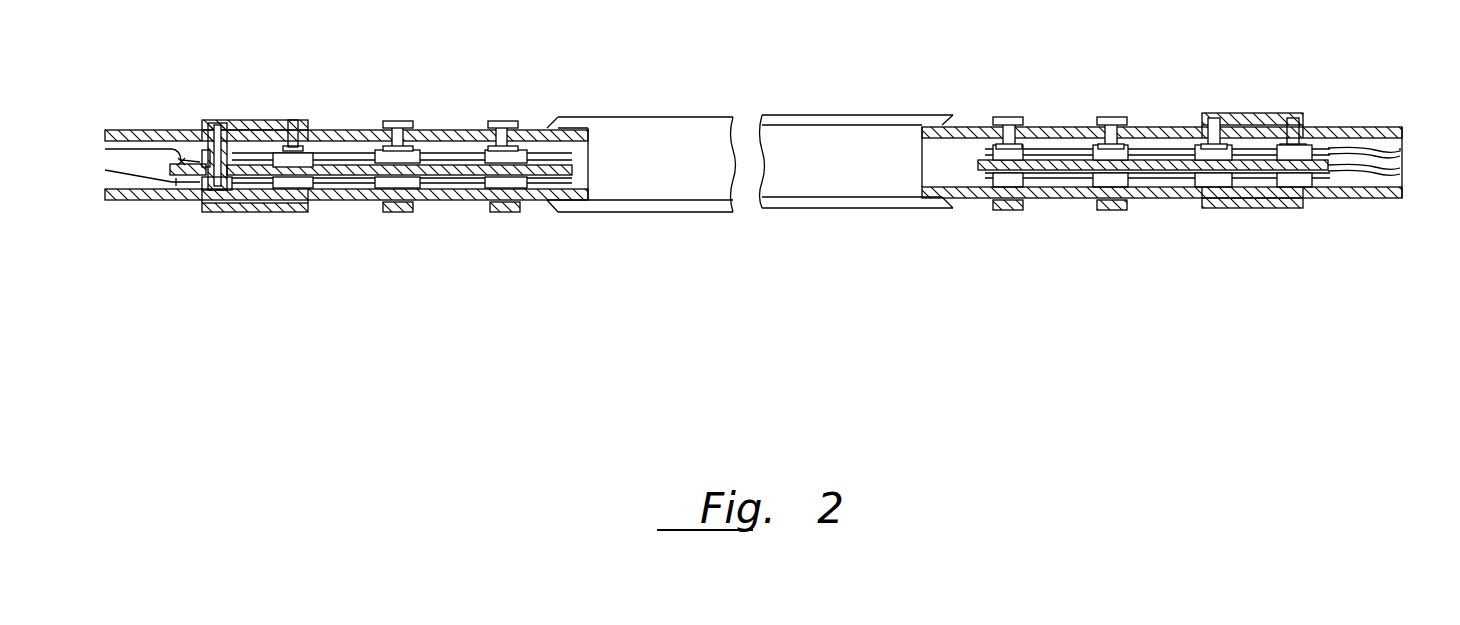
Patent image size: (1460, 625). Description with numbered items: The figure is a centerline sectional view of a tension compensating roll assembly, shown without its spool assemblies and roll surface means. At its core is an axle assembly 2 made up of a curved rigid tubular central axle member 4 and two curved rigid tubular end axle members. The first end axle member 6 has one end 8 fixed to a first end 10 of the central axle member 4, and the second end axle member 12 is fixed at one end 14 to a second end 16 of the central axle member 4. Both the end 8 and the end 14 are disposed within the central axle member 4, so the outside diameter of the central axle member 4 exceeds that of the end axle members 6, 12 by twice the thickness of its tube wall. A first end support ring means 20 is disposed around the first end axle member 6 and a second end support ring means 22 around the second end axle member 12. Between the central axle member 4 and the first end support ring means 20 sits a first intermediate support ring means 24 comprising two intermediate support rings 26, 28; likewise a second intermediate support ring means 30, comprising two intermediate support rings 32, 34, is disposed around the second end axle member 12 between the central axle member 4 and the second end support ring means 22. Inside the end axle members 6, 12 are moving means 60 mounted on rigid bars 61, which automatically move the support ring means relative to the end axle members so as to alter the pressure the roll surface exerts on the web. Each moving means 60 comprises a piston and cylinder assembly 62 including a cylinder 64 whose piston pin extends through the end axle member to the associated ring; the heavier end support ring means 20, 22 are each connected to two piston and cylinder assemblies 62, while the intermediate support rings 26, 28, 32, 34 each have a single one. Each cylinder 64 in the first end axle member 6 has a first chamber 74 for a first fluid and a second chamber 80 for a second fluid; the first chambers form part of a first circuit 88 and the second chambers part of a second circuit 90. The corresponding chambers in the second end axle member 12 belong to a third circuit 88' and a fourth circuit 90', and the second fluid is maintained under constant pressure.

The axle assembly 2 is at (306, 62).
The central axle member 4 is at (712, 117).
The first end axle member 6 is at (125, 130).
The end of first end axle member 8 is at (590, 200).
The first end of central axle member 10 is at (575, 210).
The second end axle member 12 is at (1170, 127).
The end of second end axle member 14 is at (920, 127).
The second end of central axle member 16 is at (925, 118).
The first end support ring means 20 is at (232, 122).
The second end support ring means 22 is at (1262, 113).
The first intermediate support ring means 24 is at (395, 122).
The intermediate support ring 26 is at (405, 121).
The intermediate support ring 28 is at (508, 121).
The second intermediate support ring means 30 is at (1008, 118).
The intermediate support ring 32 is at (1118, 117).
The intermediate support ring 34 is at (1005, 117).
The moving means 60 is at (313, 158).
The rigid bar 61 is at (455, 172).
The piston and cylinder assembly 62 is at (218, 182).
The cylinder 64 is at (523, 158).
The first chamber 74 is at (234, 156).
The second chamber 80 is at (222, 191).
The first circuit 88 is at (135, 152).
The second circuit 90 is at (135, 173).
The third circuit 88' is at (1387, 147).
The fourth circuit 90' is at (1387, 165).